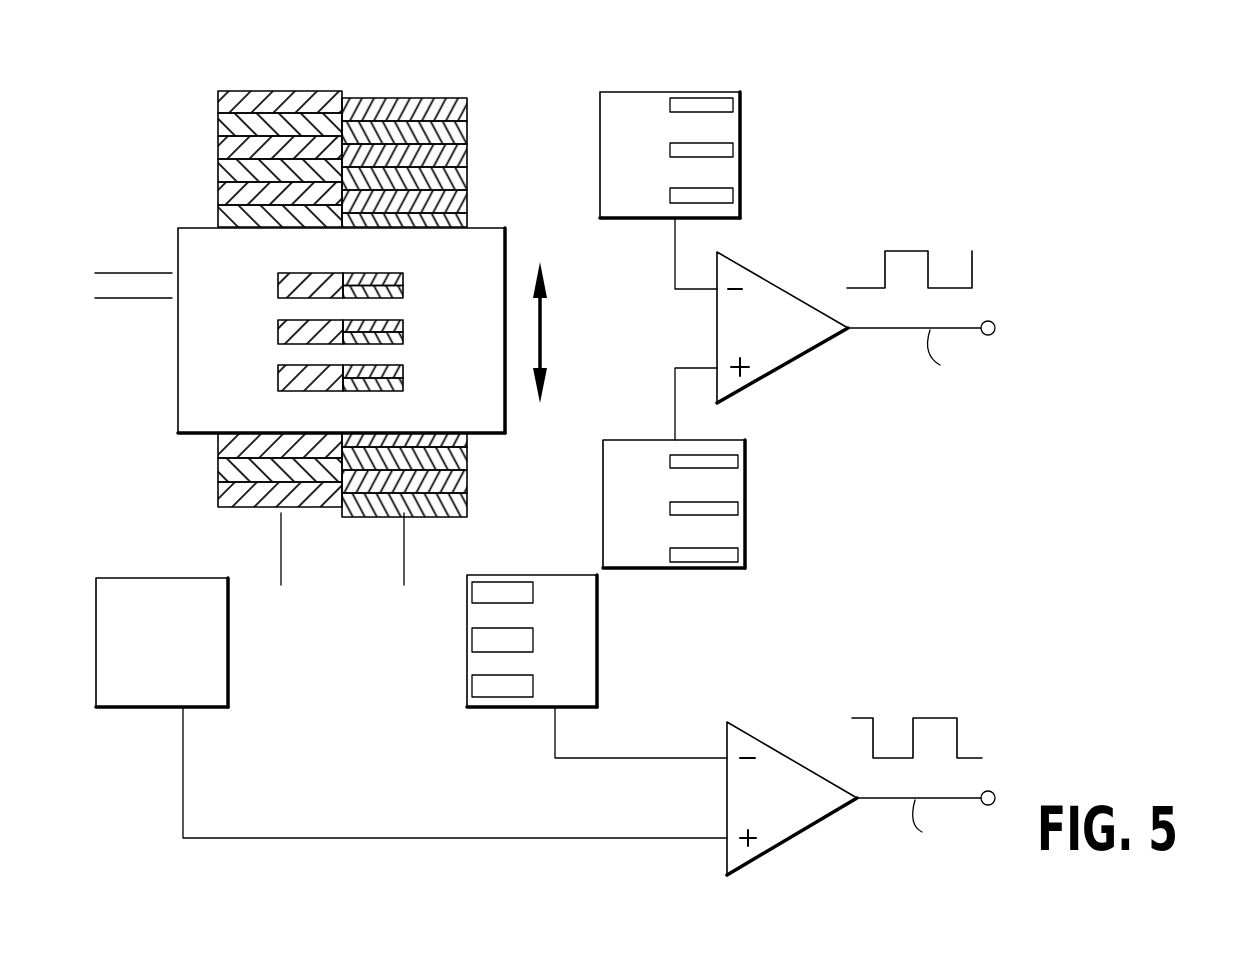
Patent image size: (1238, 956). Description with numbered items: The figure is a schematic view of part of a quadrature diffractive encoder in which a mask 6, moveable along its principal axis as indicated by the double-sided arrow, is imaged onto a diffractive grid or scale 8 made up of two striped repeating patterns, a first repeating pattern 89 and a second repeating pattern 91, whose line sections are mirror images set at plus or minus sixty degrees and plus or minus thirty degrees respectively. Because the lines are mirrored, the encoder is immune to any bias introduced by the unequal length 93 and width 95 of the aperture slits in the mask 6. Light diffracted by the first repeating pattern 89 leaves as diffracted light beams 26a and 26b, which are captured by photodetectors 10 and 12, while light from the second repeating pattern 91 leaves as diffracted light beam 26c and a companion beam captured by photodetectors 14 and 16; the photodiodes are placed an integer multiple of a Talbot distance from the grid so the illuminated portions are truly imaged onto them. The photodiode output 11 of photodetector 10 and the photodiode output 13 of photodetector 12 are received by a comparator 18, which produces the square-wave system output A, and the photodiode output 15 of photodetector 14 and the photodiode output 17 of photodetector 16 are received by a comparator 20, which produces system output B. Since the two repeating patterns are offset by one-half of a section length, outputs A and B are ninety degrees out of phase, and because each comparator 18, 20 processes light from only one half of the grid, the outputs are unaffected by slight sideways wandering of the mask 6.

The mask 6 is at (168, 370).
The diffractive grid 8 is at (357, 267).
The first repeating pattern 89 is at (404, 83).
The second repeating pattern 91 is at (280, 76).
The length of the aperture slits 93 is at (133, 340).
The width of the aperture slits 95 is at (404, 560).
The photodetector 10 is at (723, 120).
The photodiode output 11 is at (675, 248).
The photodetector 12 is at (692, 504).
The photodiode output 13 is at (675, 398).
The photodetector 14 is at (522, 641).
The photodiode output 15 is at (555, 735).
The photodetector 16 is at (228, 660).
The photodiode output 17 is at (183, 805).
The comparator 18 is at (792, 362).
The comparator 20 is at (781, 752).
The diffracted light beam 26a is at (723, 104).
The diffracted light beam 26b is at (730, 462).
The diffracted light beam 26c is at (485, 690).